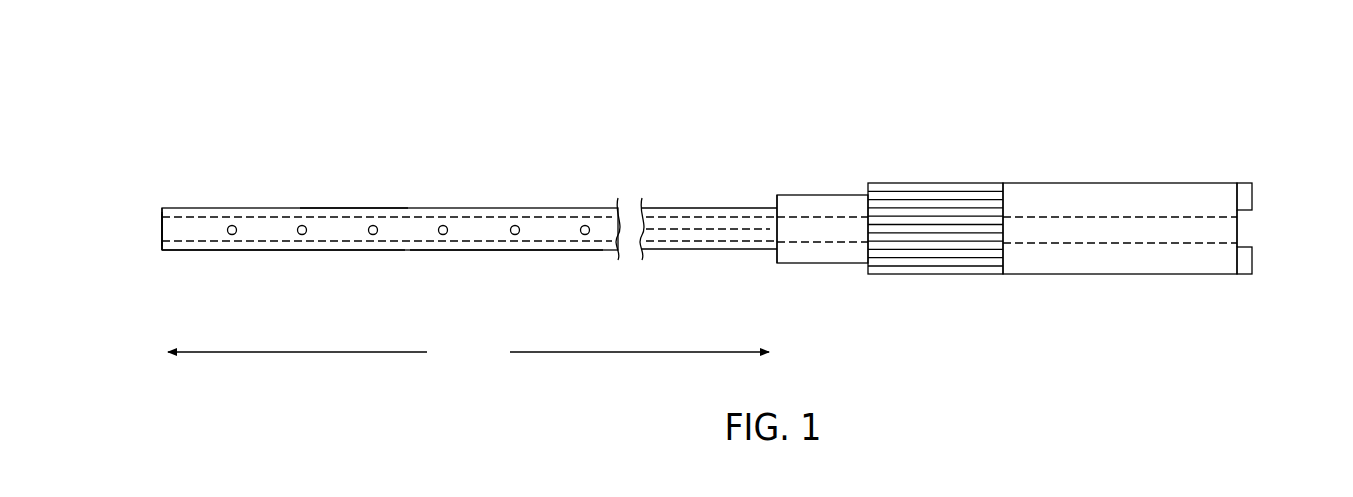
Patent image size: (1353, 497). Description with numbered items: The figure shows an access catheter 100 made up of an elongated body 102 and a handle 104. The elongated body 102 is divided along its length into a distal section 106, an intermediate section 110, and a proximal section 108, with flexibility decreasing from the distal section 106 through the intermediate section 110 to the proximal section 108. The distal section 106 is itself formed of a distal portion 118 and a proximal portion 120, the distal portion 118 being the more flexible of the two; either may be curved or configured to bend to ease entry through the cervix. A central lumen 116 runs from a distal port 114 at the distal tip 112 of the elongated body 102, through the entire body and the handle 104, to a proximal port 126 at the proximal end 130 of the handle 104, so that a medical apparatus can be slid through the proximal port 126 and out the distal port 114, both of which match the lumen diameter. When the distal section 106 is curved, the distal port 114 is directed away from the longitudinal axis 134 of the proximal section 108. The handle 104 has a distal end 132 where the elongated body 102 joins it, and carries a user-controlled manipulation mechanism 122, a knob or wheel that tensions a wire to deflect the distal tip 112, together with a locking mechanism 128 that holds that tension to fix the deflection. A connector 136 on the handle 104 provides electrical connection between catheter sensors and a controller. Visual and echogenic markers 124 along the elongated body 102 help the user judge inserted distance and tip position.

The access catheter 100 is at (1013, 79).
The elongated body 102 is at (452, 174).
The handle 104 is at (1074, 161).
The distal section 106 is at (162, 281).
The proximal section 108 is at (607, 281).
The intermediate section 110 is at (410, 281).
The distal tip 112 is at (162, 208).
The distal port 114 is at (162, 230).
The central lumen 116 is at (603, 226).
The distal portion 118 is at (292, 194).
The proximal portion 120 is at (408, 194).
The manipulation mechanism 122 is at (937, 275).
The visual and echogenic markers 124 is at (515, 225).
The proximal port 126 is at (1237, 228).
The locking mechanism 128 is at (812, 264).
The proximal end 130 is at (1237, 183).
The distal end 132 is at (777, 195).
The longitudinal axis 134 is at (680, 228).
The connector 136 is at (1243, 275).